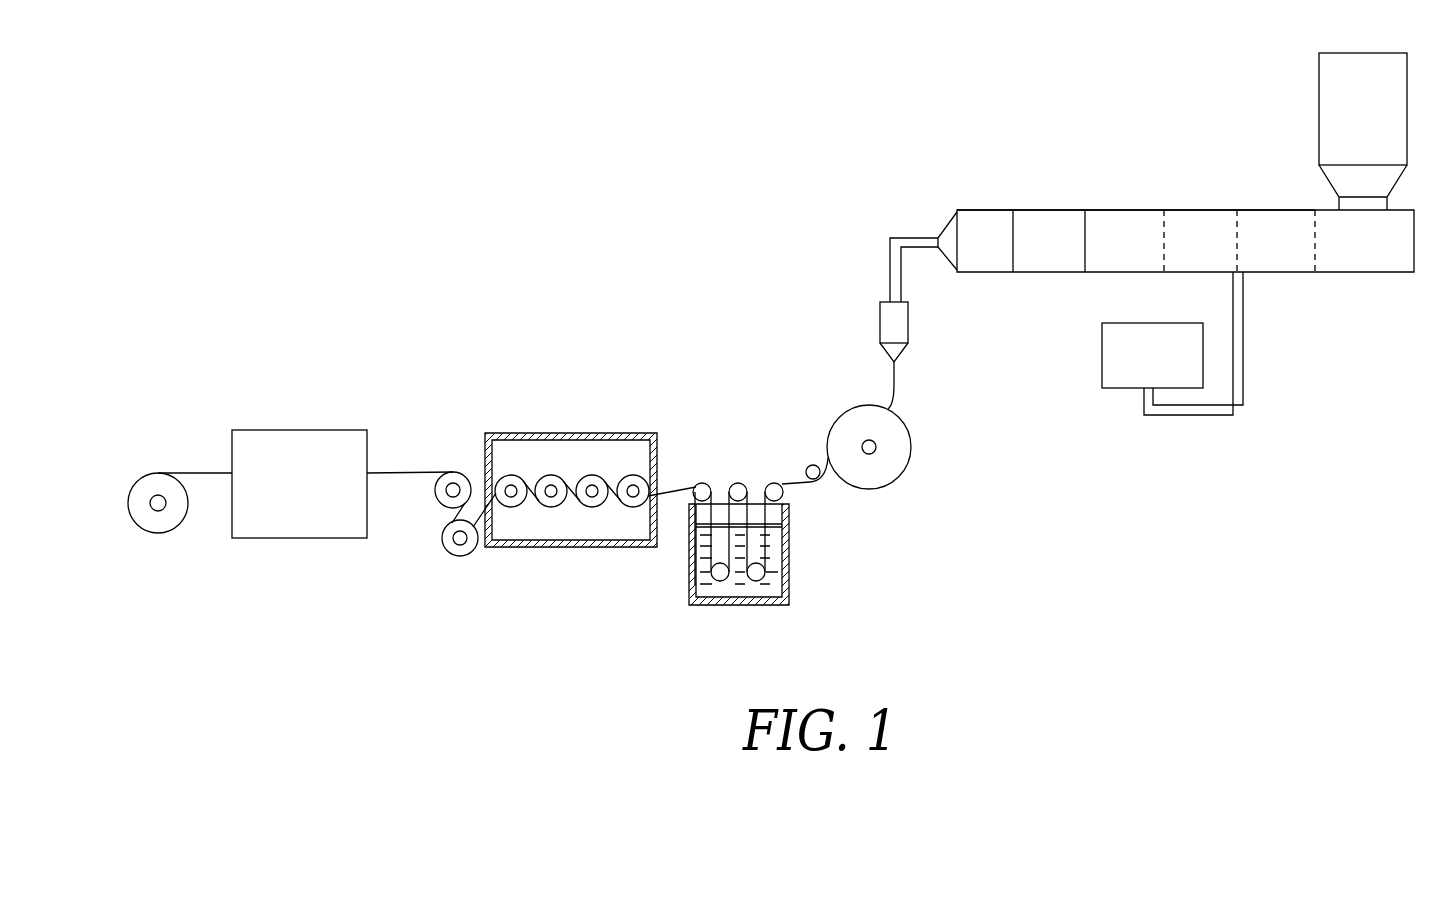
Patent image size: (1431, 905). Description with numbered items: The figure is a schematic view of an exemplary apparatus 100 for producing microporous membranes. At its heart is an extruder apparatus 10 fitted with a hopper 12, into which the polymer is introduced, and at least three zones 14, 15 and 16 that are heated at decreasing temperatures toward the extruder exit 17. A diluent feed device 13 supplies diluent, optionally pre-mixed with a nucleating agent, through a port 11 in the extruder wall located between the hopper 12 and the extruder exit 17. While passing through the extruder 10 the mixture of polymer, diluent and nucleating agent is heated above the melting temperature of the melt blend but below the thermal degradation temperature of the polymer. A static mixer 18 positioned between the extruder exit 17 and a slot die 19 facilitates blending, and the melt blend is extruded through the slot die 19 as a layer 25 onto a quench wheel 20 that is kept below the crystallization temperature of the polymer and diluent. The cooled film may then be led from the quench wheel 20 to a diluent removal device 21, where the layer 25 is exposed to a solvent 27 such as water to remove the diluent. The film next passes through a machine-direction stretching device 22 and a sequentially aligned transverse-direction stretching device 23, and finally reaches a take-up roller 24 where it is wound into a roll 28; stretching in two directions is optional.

The apparatus 100 is at (638, 199).
The extruder apparatus 10 is at (1187, 200).
The port 11 is at (1244, 274).
The hopper 12 is at (1328, 78).
The diluent feed device 13 is at (1102, 355).
The extruder zone 14 is at (1286, 218).
The extruder zone 15 is at (1222, 218).
The extruder zone 16 is at (1122, 218).
The extruder exit 17 is at (1048, 218).
The static mixer 18 is at (978, 218).
The slot die 19 is at (908, 320).
The quench wheel 20 is at (885, 474).
The diluent removal device 21 is at (689, 591).
The machine-direction stretching device 22 is at (603, 433).
The transverse-direction stretching device 23 is at (295, 443).
The take-up roller 24 is at (167, 515).
The layer 25 is at (896, 383).
The solvent 27 is at (740, 590).
The roll 28 is at (153, 472).